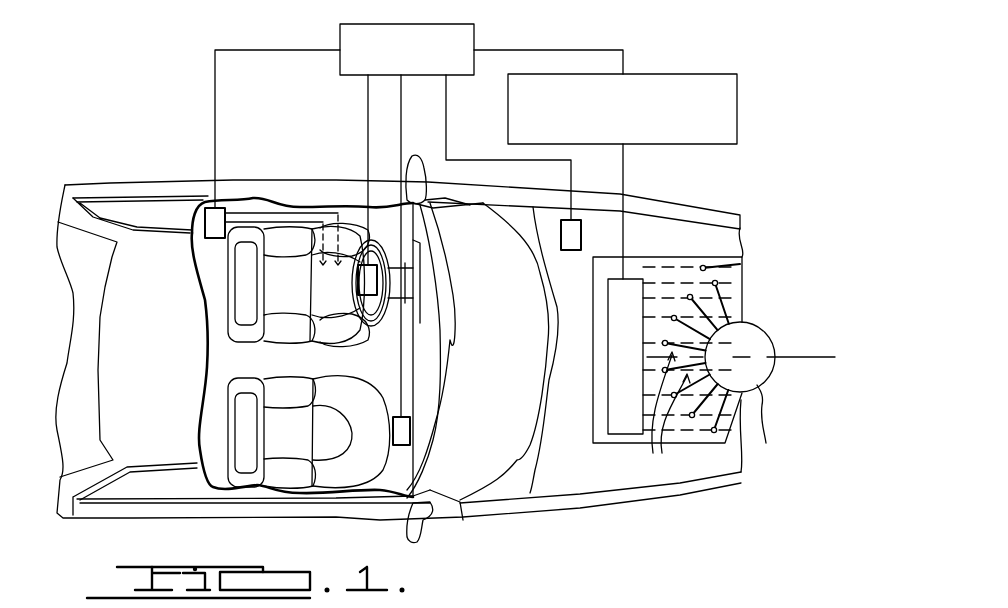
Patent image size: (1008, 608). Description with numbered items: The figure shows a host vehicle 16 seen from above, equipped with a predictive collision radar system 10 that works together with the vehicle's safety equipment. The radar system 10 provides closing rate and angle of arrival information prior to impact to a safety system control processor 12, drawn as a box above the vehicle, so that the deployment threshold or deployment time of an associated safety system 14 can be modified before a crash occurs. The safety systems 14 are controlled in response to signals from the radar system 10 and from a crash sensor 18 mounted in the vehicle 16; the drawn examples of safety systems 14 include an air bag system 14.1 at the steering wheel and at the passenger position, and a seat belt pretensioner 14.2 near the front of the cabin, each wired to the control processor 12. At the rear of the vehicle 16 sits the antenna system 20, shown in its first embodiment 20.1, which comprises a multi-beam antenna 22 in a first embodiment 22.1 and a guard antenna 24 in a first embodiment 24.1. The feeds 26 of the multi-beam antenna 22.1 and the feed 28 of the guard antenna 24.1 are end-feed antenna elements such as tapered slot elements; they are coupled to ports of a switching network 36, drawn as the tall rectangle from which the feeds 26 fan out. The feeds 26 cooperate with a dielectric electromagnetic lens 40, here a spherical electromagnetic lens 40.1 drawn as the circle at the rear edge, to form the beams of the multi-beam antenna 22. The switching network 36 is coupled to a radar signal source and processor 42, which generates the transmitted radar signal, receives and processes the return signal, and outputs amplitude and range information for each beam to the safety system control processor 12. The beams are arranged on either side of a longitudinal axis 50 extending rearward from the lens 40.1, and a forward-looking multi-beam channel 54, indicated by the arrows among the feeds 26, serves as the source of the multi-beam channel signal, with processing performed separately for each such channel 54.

The predictive collision radar system 10 is at (789, 83).
The safety system control processor 12 is at (340, 34).
The safety system 14 is at (214, 157).
The air bag system 14.1 is at (398, 428).
The seat belt pretensioner 14.2 is at (213, 207).
The host vehicle 16 is at (399, 349).
The crash sensor 18 is at (568, 240).
The antenna system 20 is at (731, 302).
The first embodiment of the antenna system 20.1 is at (731, 302).
The multi-beam antenna 22 is at (776, 353).
The first embodiment of the multi-beam antenna 22.1 is at (779, 337).
The guard antenna 24 is at (739, 332).
The first embodiment of the guard antenna 24.1 is at (752, 268).
The feeds of the multi-beam antenna 26 is at (735, 311).
The feed of the guard antenna 28 is at (740, 257).
The switching network 36 is at (614, 357).
The dielectric electromagnetic lens 40 is at (800, 432).
The spherical electromagnetic lens 40.1 is at (800, 432).
The radar signal source and processor 42 is at (705, 133).
The longitudinal axis 50 is at (800, 360).
The forward-looking multi-beam channel 54 is at (665, 417).